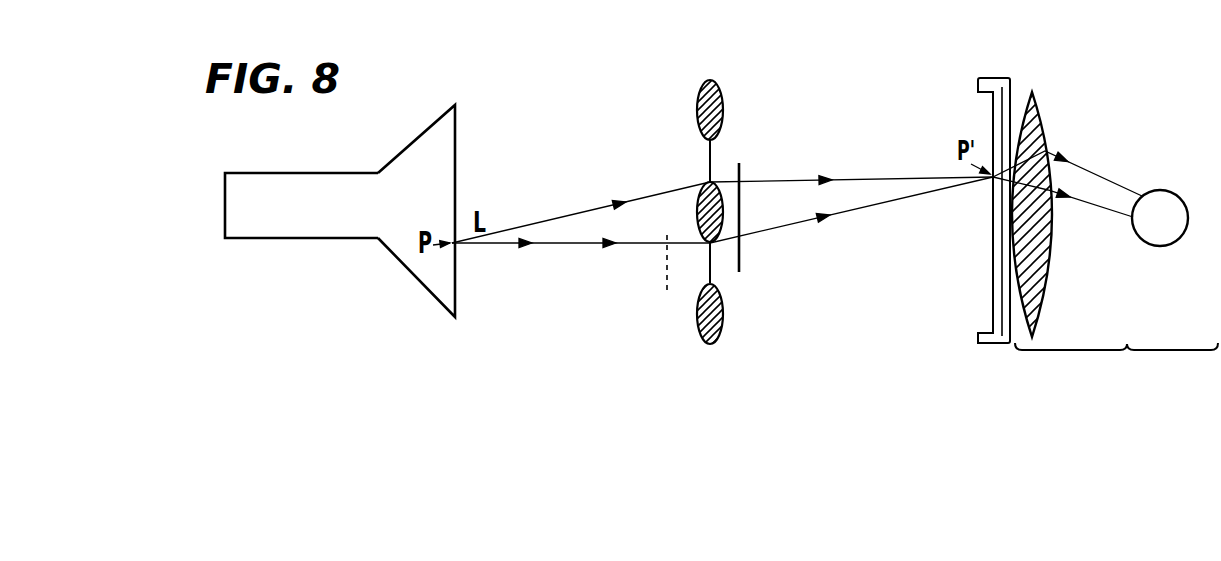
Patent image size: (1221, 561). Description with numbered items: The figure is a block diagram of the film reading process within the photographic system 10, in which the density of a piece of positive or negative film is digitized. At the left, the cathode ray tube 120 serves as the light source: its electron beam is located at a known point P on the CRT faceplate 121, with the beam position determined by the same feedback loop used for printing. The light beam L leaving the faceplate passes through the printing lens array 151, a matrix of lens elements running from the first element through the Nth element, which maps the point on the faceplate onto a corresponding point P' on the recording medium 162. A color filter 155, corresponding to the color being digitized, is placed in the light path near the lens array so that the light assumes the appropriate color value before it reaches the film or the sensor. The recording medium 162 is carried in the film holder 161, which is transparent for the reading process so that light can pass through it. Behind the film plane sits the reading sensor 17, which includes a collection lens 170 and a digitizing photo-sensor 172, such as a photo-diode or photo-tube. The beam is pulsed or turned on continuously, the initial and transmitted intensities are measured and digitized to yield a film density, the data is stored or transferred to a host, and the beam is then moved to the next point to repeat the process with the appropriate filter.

The film printing/reading system 10 is at (790, 92).
The reading sensor 17 is at (1116, 366).
The cathode ray tube 120 is at (311, 222).
The CRT faceplate 121 is at (458, 135).
The printing lens array 151 is at (714, 80).
The color filter 155 is at (741, 258).
The film holder 161 is at (984, 346).
The recording medium 162 is at (988, 105).
The collection lens 170 is at (1038, 115).
The digitizing photo-sensor 172 is at (1163, 190).